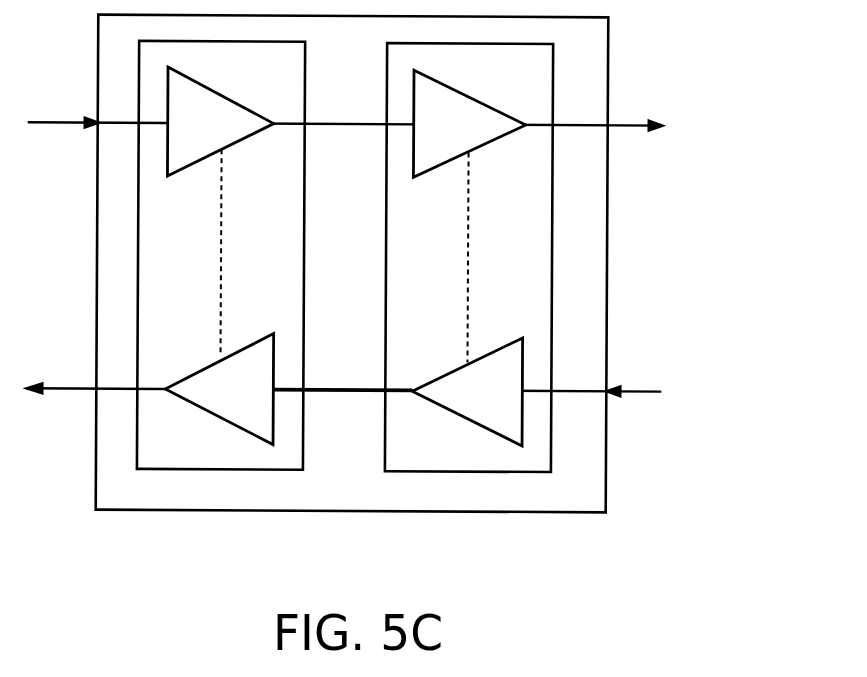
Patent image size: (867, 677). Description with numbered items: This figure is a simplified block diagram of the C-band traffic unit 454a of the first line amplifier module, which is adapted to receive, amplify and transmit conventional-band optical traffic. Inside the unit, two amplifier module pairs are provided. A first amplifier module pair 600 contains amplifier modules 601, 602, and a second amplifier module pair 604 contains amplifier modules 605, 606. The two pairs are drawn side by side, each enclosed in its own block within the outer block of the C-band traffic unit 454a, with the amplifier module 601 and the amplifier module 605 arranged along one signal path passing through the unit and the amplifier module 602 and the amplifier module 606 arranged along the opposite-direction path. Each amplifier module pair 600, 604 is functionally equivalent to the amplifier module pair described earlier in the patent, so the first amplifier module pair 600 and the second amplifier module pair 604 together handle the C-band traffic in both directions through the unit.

The C-band traffic unit 454a is at (607, 42).
The first amplifier module pair 600 is at (138, 241).
The second amplifier module pair 604 is at (552, 245).
The amplifier module 601 is at (224, 138).
The amplifier module 602 is at (265, 407).
The amplifier module 605 is at (470, 142).
The amplifier module 606 is at (513, 408).